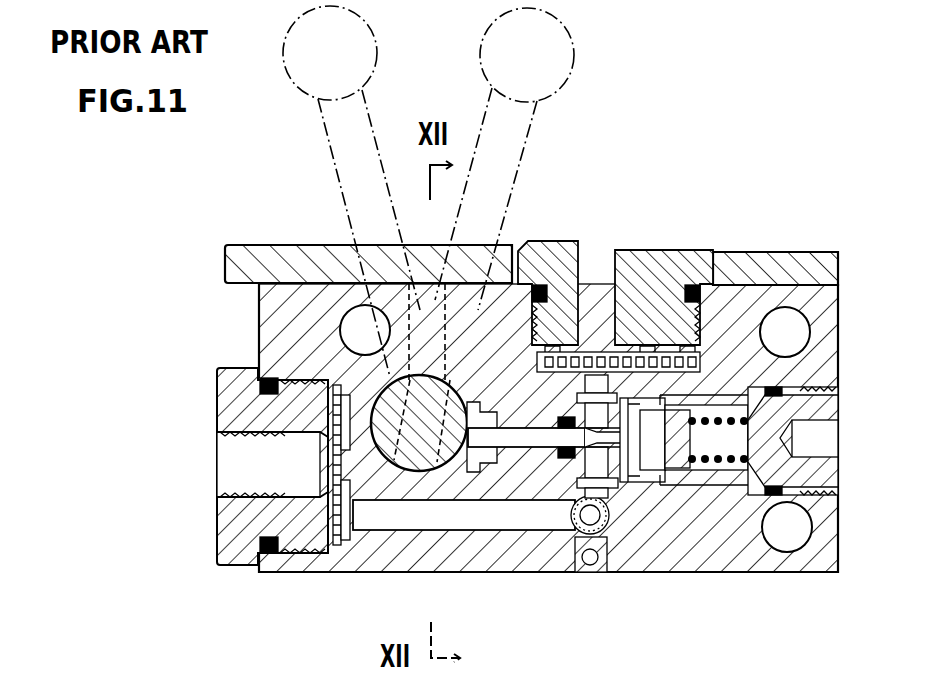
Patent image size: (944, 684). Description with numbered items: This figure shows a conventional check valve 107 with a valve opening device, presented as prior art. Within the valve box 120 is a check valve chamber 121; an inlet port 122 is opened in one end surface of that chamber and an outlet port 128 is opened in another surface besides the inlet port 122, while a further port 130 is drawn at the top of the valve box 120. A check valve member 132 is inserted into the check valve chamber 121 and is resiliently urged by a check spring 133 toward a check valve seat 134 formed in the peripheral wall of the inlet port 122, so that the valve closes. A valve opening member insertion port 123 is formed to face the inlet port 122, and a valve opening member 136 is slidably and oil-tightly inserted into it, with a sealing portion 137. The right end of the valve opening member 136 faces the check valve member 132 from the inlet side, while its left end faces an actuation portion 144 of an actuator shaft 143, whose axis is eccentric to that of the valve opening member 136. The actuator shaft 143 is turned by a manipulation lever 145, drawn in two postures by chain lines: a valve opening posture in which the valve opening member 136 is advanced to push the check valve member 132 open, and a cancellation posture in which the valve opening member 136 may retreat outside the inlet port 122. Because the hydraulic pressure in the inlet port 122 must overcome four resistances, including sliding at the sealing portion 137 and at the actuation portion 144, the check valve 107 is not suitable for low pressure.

The check valve 107 is at (689, 133).
The valve box 120 is at (777, 575).
The check valve chamber 121 is at (716, 440).
The inlet port 122 is at (644, 430).
The valve opening member insertion port 123 is at (515, 449).
The outlet port 128 is at (657, 350).
The supply port 130 is at (600, 240).
The check valve member 132 is at (679, 440).
The check spring 133 is at (692, 388).
The check valve seat 134 is at (737, 400).
The valve opening member 136 is at (549, 455).
The sealing portion 137 is at (524, 386).
The actuator shaft 143 is at (415, 472).
The actuation portion 144 is at (458, 470).
The manipulation lever 145 is at (366, 20).